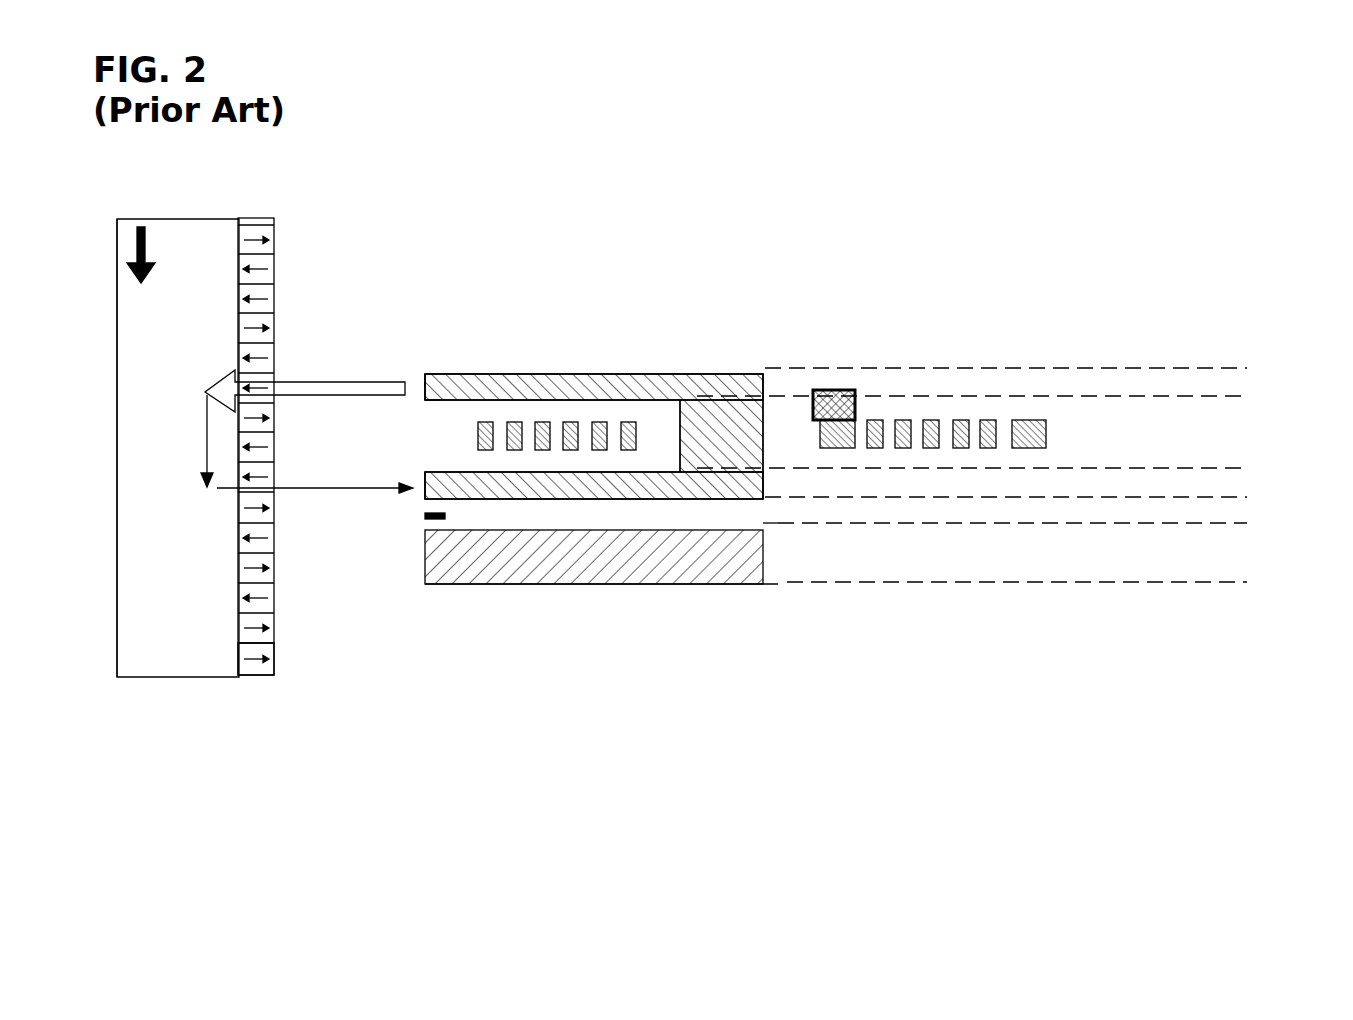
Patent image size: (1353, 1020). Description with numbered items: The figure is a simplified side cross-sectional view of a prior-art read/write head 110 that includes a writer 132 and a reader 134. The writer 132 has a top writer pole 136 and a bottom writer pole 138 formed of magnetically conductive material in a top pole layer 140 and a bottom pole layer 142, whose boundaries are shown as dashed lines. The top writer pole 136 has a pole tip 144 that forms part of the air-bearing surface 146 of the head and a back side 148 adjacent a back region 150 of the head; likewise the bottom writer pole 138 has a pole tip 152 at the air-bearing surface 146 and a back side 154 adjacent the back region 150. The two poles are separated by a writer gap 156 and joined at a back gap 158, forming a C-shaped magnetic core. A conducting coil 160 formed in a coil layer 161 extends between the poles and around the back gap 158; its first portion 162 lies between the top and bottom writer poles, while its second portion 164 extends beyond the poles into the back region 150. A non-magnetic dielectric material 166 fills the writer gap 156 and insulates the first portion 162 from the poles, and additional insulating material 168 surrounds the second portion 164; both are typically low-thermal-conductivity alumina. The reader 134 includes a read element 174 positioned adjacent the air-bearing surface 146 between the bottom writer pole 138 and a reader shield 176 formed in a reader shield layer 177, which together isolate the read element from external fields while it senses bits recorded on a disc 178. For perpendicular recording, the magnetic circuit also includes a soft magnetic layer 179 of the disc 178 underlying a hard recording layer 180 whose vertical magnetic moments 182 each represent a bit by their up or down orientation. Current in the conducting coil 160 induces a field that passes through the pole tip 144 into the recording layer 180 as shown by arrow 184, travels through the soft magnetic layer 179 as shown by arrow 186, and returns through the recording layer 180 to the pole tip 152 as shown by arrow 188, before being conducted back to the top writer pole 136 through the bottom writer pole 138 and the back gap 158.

The read/write head 110 is at (885, 288).
The writer 132 is at (573, 335).
The reader 134 is at (450, 613).
The top writer pole 136 is at (612, 385).
The bottom writer pole 138 is at (623, 493).
The top pole layer 140 is at (1228, 382).
The bottom pole layer 142 is at (1233, 480).
The pole tip 144 is at (423, 377).
The air-bearing surface 146 is at (405, 555).
The back side 148 is at (765, 383).
The back region 150 is at (1007, 560).
The pole tip 152 is at (425, 473).
The back side 154 is at (765, 483).
The writer gap 156 is at (430, 432).
The back gap 158 is at (763, 443).
The conducting coil 160 is at (998, 410).
The coil layer 161 is at (1233, 433).
The first portion 162 is at (542, 417).
The second portion 164 is at (972, 457).
The non-magnetic dielectric material 166 is at (468, 420).
The insulating material 168 is at (888, 418).
The read element 174 is at (423, 517).
The reader shield 176 is at (557, 565).
The reader shield layer 177 is at (1238, 552).
The disc 178 is at (123, 688).
The soft magnetic layer 179 is at (133, 555).
The recording layer 180 is at (253, 215).
The vertical magnetic moments 182 is at (253, 667).
The arrow 184 is at (300, 380).
The arrow 186 is at (207, 436).
The arrow 188 is at (305, 492).